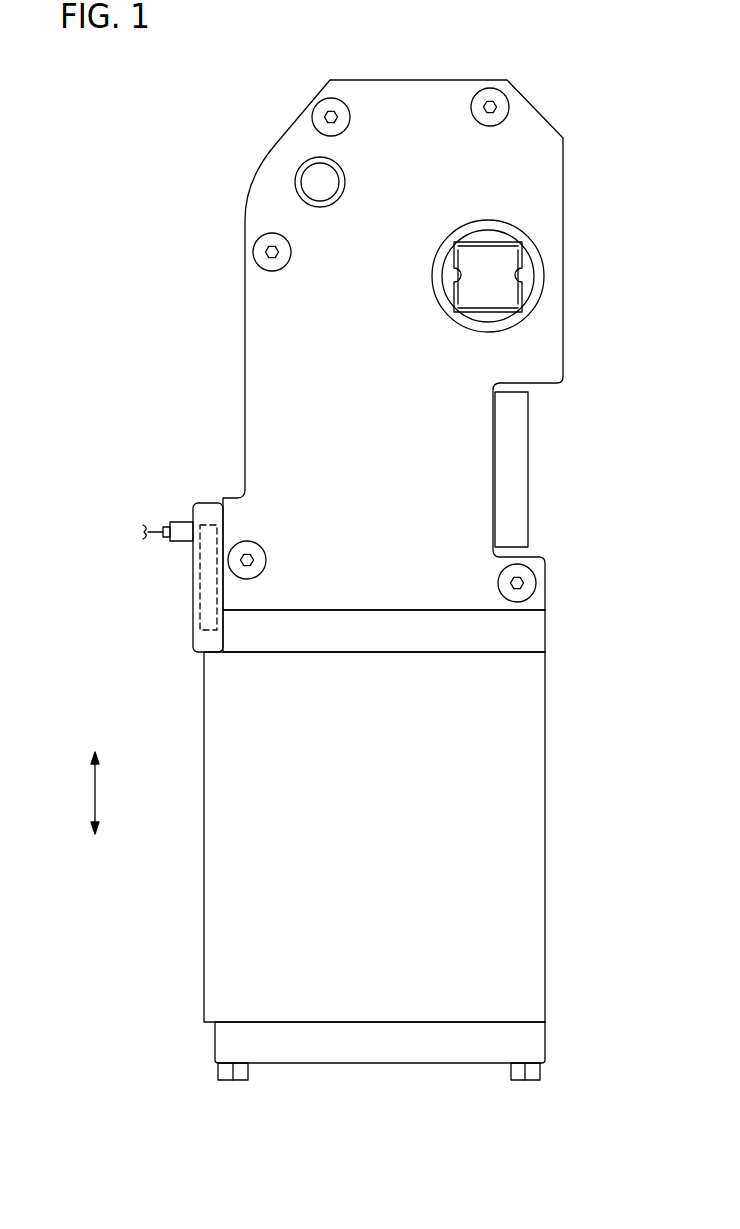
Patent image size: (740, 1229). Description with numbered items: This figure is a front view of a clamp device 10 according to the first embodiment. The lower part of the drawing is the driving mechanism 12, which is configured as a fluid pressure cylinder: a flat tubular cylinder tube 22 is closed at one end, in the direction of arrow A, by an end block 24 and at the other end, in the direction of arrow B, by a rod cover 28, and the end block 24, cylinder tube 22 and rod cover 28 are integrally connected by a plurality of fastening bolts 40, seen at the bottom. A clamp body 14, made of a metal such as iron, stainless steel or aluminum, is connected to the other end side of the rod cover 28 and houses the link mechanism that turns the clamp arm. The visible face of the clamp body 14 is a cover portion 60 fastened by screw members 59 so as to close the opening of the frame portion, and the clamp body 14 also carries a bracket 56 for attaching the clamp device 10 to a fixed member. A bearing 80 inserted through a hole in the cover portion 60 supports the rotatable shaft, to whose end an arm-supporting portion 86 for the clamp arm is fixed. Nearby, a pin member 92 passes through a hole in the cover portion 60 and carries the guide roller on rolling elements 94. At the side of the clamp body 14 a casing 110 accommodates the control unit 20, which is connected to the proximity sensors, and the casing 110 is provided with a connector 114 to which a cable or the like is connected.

The clamp device 10 is at (127, 154).
The driving mechanism 12 is at (568, 698).
The clamp body 14 is at (564, 108).
The control unit 20 is at (195, 600).
The cylinder tube 22 is at (530, 960).
The end block 24 is at (530, 1048).
The rod cover 28 is at (530, 637).
The fastening bolts 40 is at (524, 1082).
The bracket 56 is at (512, 471).
The screw members 59 is at (530, 585).
The cover portion 60 is at (545, 352).
The bearing 80 is at (524, 239).
The arm-supporting portion 86 is at (497, 275).
The pin member 92 is at (322, 190).
The rolling elements 94 is at (344, 178).
The casing 110 is at (193, 640).
The connector 114 is at (185, 520).